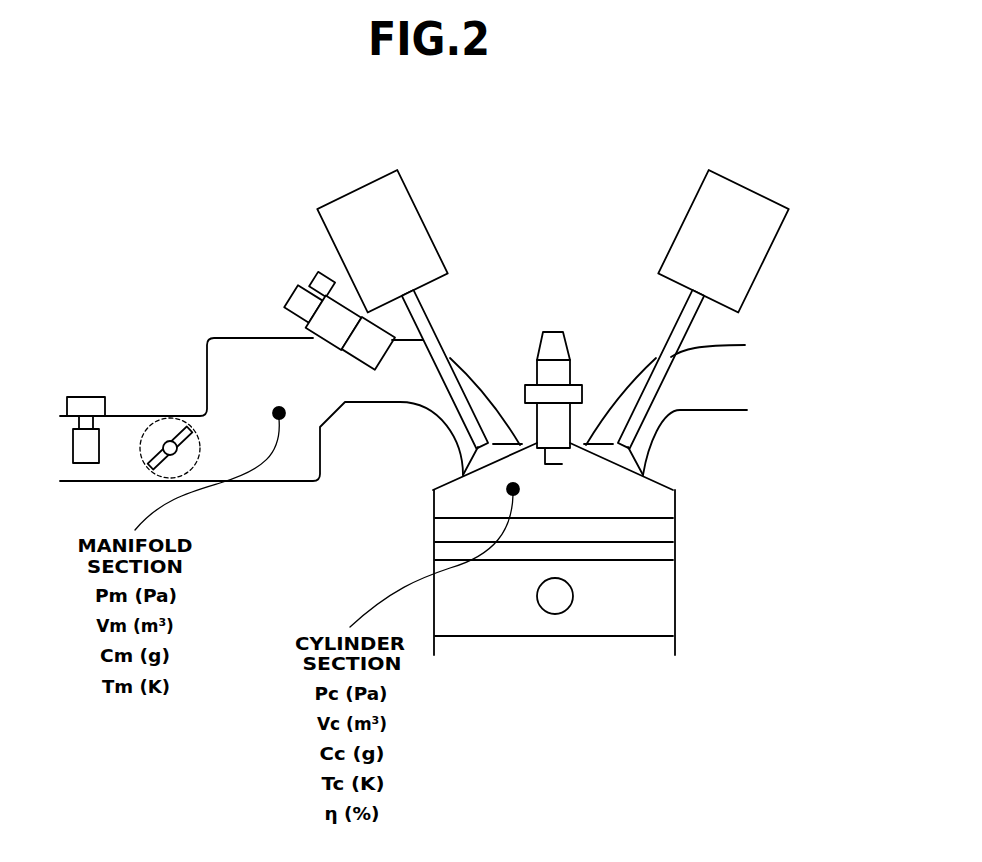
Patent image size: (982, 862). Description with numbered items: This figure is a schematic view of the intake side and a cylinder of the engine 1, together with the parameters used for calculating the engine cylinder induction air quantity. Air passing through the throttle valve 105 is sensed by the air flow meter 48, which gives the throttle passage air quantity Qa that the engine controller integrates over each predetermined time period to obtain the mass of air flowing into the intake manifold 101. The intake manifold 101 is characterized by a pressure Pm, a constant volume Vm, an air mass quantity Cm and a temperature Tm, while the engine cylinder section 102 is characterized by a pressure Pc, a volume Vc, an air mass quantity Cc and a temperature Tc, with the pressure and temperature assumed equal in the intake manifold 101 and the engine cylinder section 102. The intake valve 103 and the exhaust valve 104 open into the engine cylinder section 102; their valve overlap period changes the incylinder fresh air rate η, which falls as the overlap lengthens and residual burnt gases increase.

The engine 1 is at (771, 347).
The air flow meter 48 is at (84, 397).
The intake manifold 101 is at (235, 338).
The engine cylinder section 102 is at (676, 568).
The intake valve 103 is at (437, 333).
The exhaust valve 104 is at (672, 333).
The throttle valve 105 is at (176, 440).